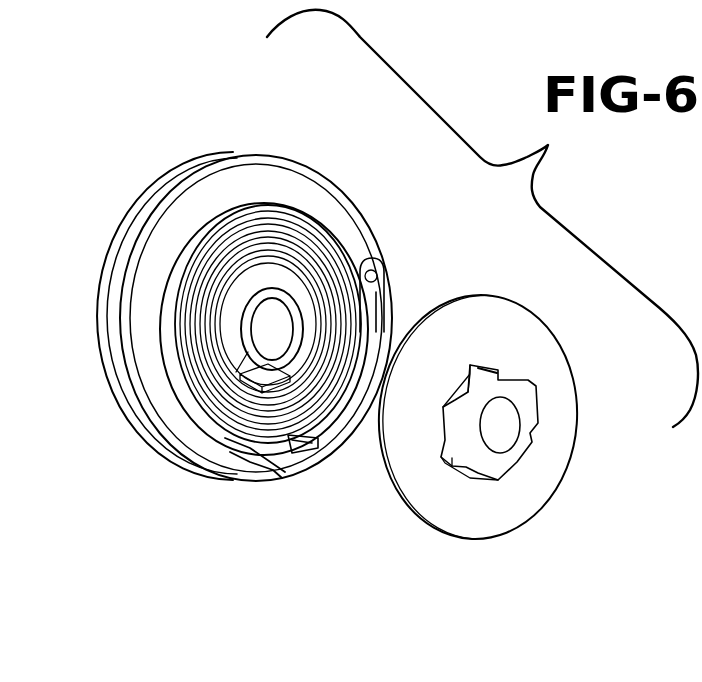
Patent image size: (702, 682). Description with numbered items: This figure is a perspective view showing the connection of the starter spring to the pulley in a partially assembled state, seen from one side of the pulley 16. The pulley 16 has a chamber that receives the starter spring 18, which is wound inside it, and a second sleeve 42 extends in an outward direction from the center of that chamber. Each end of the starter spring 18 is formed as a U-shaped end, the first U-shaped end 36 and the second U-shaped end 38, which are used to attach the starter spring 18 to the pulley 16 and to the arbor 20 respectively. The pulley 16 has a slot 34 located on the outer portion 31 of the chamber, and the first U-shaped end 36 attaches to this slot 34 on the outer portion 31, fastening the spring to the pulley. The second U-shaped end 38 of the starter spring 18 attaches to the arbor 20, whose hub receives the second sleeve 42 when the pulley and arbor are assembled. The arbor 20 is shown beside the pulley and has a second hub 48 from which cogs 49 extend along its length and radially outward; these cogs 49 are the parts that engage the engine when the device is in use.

The pulley 16 is at (197, 167).
The starter spring 18 is at (302, 230).
The second sleeve 42 is at (248, 293).
The second U-shaped end 38 is at (256, 383).
The outer portion 31 is at (243, 445).
The first U-shaped end 36 is at (296, 432).
The slot 34 is at (322, 427).
The arbor 20 is at (520, 502).
The second hub 48 is at (530, 422).
The cogs 49 is at (497, 375).